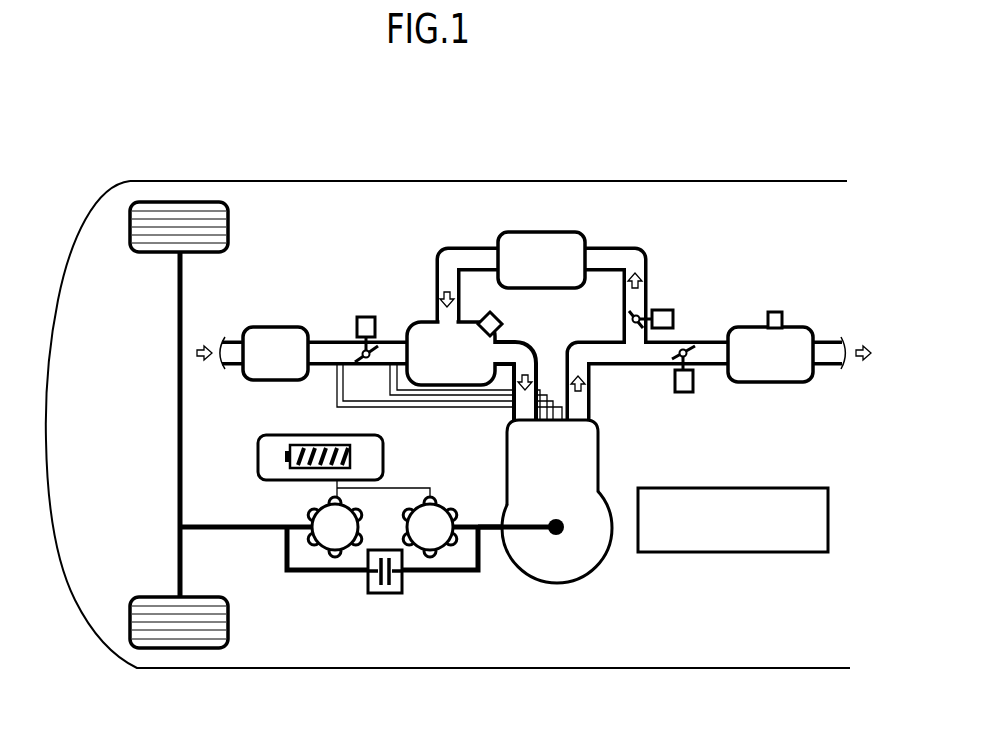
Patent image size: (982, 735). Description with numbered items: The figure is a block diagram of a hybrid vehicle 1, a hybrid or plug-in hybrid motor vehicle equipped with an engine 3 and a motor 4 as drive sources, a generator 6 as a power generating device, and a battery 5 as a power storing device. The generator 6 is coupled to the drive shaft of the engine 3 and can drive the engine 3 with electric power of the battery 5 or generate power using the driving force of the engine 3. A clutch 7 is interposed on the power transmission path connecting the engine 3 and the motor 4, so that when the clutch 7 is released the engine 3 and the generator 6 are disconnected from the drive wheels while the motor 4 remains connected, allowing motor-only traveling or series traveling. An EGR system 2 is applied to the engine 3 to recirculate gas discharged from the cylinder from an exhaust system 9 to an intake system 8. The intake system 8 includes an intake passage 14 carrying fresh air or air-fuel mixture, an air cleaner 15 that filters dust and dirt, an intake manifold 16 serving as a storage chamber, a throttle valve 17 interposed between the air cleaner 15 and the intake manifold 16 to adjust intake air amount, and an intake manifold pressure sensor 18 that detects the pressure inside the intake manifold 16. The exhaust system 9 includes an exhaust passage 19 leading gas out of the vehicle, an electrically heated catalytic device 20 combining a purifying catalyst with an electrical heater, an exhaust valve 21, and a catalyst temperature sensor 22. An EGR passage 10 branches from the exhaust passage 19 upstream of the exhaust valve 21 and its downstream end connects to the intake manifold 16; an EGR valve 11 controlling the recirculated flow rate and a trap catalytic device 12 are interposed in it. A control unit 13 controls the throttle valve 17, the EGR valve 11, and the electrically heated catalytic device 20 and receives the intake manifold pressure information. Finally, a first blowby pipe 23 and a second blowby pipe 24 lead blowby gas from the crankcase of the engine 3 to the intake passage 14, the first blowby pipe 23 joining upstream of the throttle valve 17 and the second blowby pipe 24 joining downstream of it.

The hybrid vehicle 1 is at (88, 159).
The EGR system 2 is at (573, 275).
The engine 3 is at (545, 495).
The motor 4 is at (333, 556).
The battery 5 is at (258, 457).
The generator 6 is at (438, 556).
The clutch 7 is at (385, 594).
The intake system 8 is at (372, 315).
The exhaust system 9 is at (712, 327).
The EGR passage 10 is at (463, 247).
The EGR valve 11 is at (664, 309).
The trap catalytic device 12 is at (555, 277).
The control unit 13 is at (830, 520).
The intake passage 14 is at (328, 341).
The air cleaner 15 is at (286, 370).
The intake manifold 16 is at (500, 389).
The throttle valve 17 is at (366, 316).
The intake manifold pressure sensor 18 is at (503, 321).
The exhaust passage 19 is at (709, 340).
The electrically heated catalytic device 20 is at (784, 370).
The exhaust valve 21 is at (683, 393).
The catalyst temperature sensor 22 is at (777, 311).
The first blowby pipe 23 is at (420, 411).
The second blowby pipe 24 is at (473, 408).